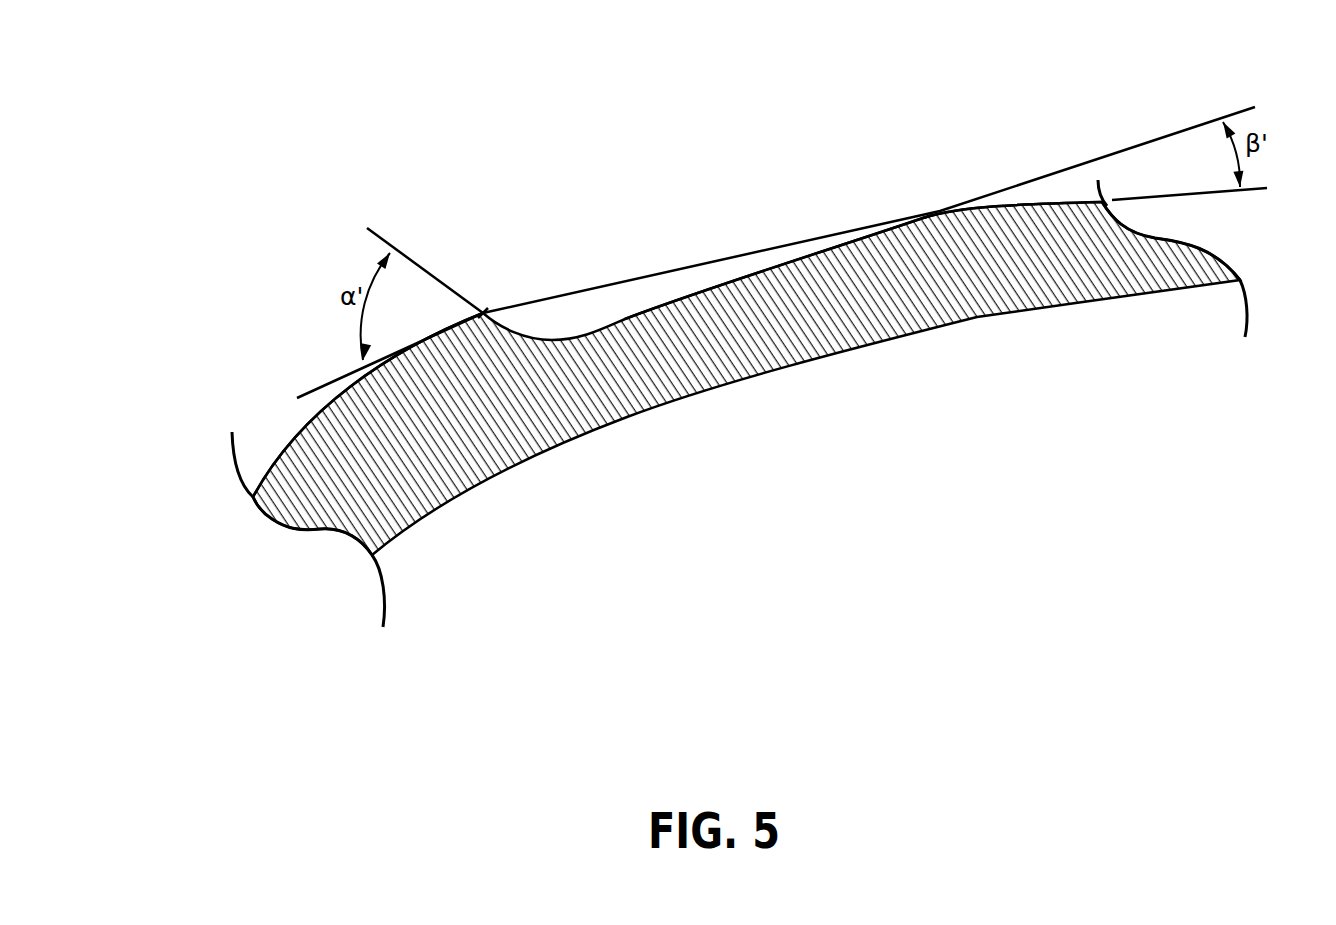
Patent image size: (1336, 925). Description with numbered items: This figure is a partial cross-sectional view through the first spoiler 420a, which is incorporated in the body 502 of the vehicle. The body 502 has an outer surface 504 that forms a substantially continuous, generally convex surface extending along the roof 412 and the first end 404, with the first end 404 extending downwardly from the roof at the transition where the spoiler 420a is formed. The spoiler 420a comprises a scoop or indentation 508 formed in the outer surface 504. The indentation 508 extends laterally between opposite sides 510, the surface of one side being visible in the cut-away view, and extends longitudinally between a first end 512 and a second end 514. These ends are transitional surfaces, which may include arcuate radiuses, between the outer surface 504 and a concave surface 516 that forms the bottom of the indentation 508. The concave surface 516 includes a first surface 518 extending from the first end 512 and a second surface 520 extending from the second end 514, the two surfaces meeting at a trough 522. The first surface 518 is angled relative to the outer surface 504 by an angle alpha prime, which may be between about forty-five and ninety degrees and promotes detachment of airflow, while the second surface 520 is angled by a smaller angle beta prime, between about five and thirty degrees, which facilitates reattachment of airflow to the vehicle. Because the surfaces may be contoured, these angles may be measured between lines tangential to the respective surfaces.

The body 502 is at (296, 195).
The outer surface 504 is at (310, 428).
The first end 404 is at (283, 520).
The roof 412 is at (1173, 262).
The indentation 508 is at (701, 227).
The sides 510 is at (603, 319).
The first end 512 is at (488, 290).
The second end 514 is at (924, 176).
The concave surface 516 is at (620, 322).
The first surface 518 is at (505, 327).
The second surface 520 is at (730, 287).
The trough 522 is at (550, 340).
The first spoiler 420a is at (1104, 540).